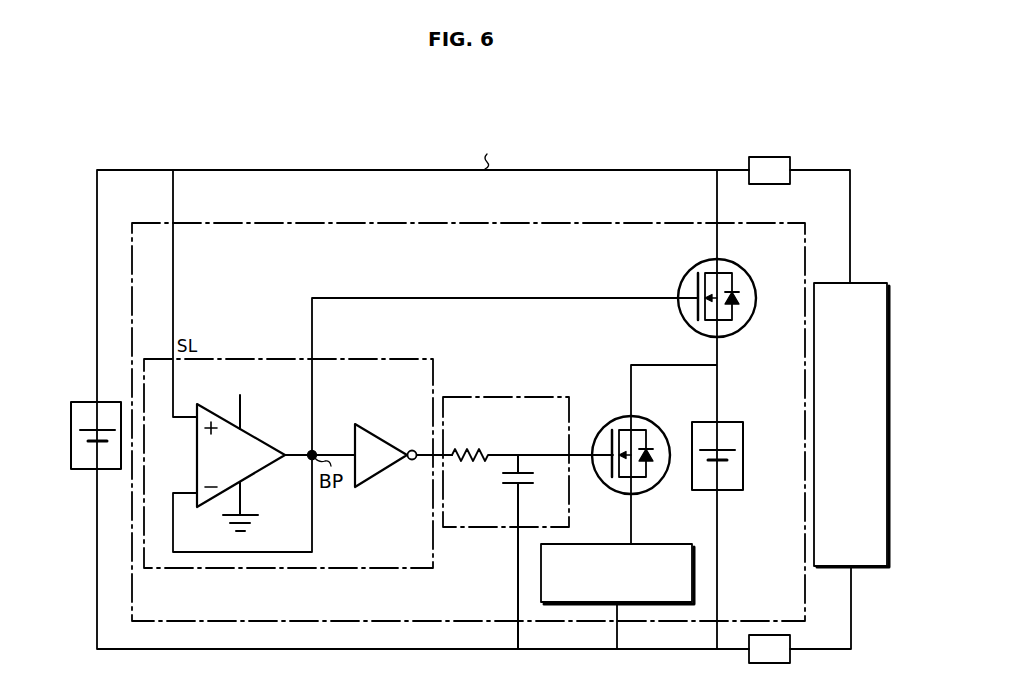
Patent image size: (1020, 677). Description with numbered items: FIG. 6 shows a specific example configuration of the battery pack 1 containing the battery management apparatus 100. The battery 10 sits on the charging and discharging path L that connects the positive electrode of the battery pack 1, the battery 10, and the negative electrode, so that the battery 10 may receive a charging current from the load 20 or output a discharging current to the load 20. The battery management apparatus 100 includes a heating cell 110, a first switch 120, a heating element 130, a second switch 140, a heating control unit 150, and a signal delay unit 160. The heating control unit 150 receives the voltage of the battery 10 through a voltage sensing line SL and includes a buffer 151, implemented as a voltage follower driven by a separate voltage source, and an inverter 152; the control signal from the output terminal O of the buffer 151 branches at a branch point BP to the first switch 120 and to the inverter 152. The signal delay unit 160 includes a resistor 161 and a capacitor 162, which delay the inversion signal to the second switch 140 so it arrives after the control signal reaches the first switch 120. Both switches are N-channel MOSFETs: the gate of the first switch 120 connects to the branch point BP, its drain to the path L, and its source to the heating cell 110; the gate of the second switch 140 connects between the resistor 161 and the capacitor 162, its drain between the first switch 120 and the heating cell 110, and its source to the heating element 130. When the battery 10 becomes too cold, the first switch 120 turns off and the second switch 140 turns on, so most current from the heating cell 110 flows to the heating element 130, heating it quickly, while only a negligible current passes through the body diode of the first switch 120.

The battery pack 1 is at (156, 148).
The battery 10 is at (71, 441).
The load 20 is at (873, 284).
The battery management apparatus 100 is at (590, 223).
The heating cell 110 is at (745, 456).
The first switch 120 is at (752, 284).
The heating element 130 is at (600, 541).
The second switch 140 is at (668, 428).
The heating control unit 150 is at (395, 357).
The buffer 151 is at (259, 441).
The inverter 152 is at (380, 436).
The signal delay unit 160 is at (505, 394).
The resistor 161 is at (478, 445).
The capacitor 162 is at (526, 486).